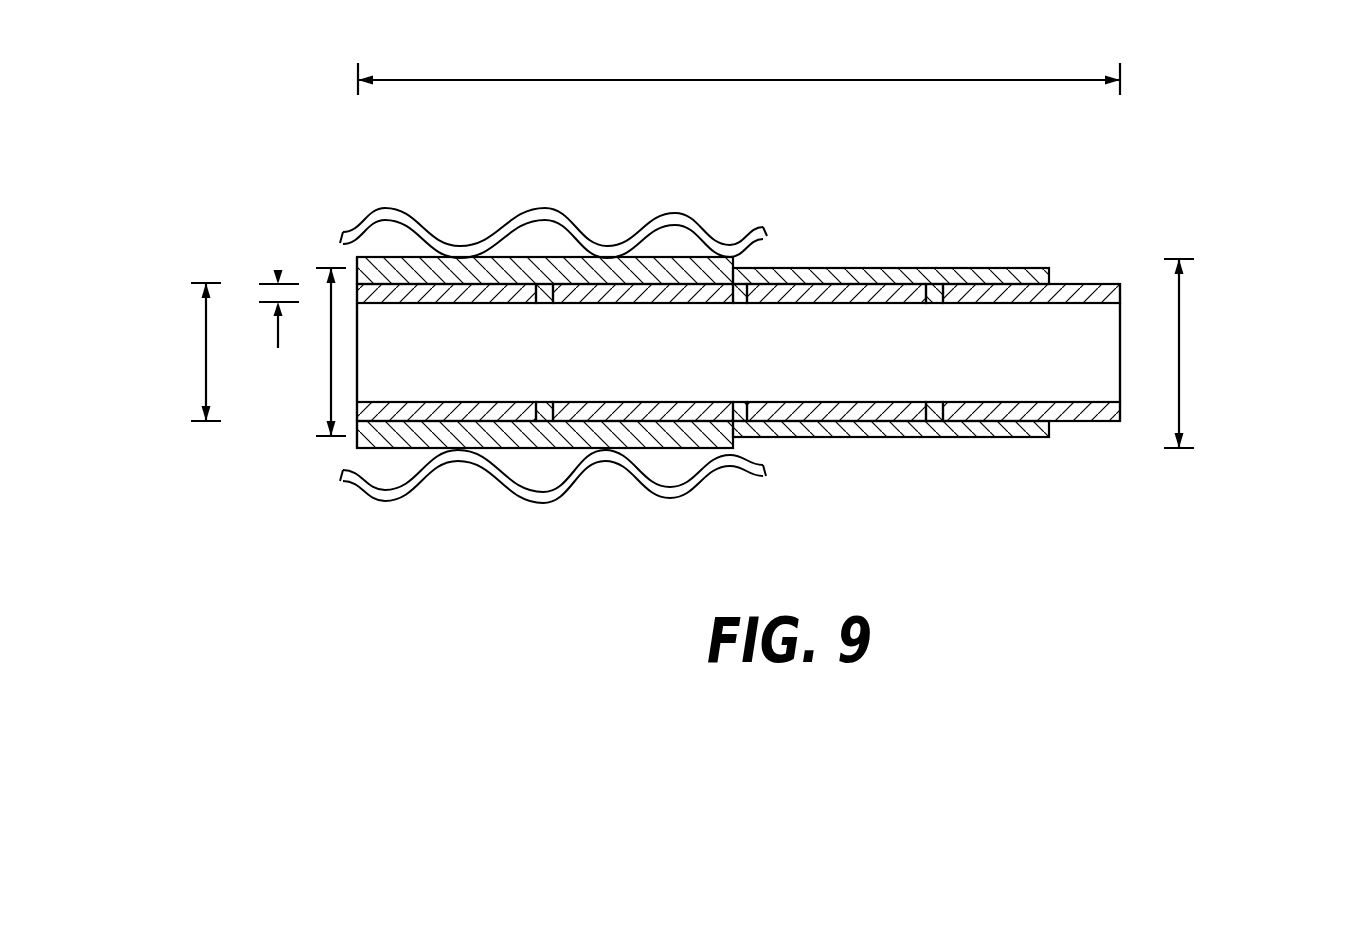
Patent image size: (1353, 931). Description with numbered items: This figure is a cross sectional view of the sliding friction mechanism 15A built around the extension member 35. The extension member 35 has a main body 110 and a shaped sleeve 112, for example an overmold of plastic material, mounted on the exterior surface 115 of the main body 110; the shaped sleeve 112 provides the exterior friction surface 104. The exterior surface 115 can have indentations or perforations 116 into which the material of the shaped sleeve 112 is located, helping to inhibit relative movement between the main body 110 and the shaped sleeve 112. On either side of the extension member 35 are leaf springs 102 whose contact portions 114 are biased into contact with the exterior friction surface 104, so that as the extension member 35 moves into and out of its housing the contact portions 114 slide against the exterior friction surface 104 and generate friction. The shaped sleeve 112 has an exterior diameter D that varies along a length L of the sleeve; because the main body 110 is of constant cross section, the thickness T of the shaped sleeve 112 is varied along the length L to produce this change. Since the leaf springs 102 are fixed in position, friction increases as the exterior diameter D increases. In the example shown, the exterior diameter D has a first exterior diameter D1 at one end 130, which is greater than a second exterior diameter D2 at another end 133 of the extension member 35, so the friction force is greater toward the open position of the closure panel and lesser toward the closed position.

The extension member 35 is at (982, 174).
The exterior friction surface 104 is at (667, 245).
The leaf spring 102 is at (351, 488).
The main body 110 is at (1098, 292).
The shaped sleeve 112 is at (890, 270).
The contact portion 114 is at (728, 462).
The exterior surface 115 is at (1067, 265).
The indentation 116 is at (932, 290).
The one end 130 is at (180, 511).
The another end 133 is at (1228, 428).
The sliding friction mechanism 15A is at (426, 591).
The length L is at (815, 80).
The exterior diameter D is at (206, 383).
The first exterior diameter D1 is at (330, 385).
The second exterior diameter D2 is at (1180, 345).
The thickness T is at (277, 271).